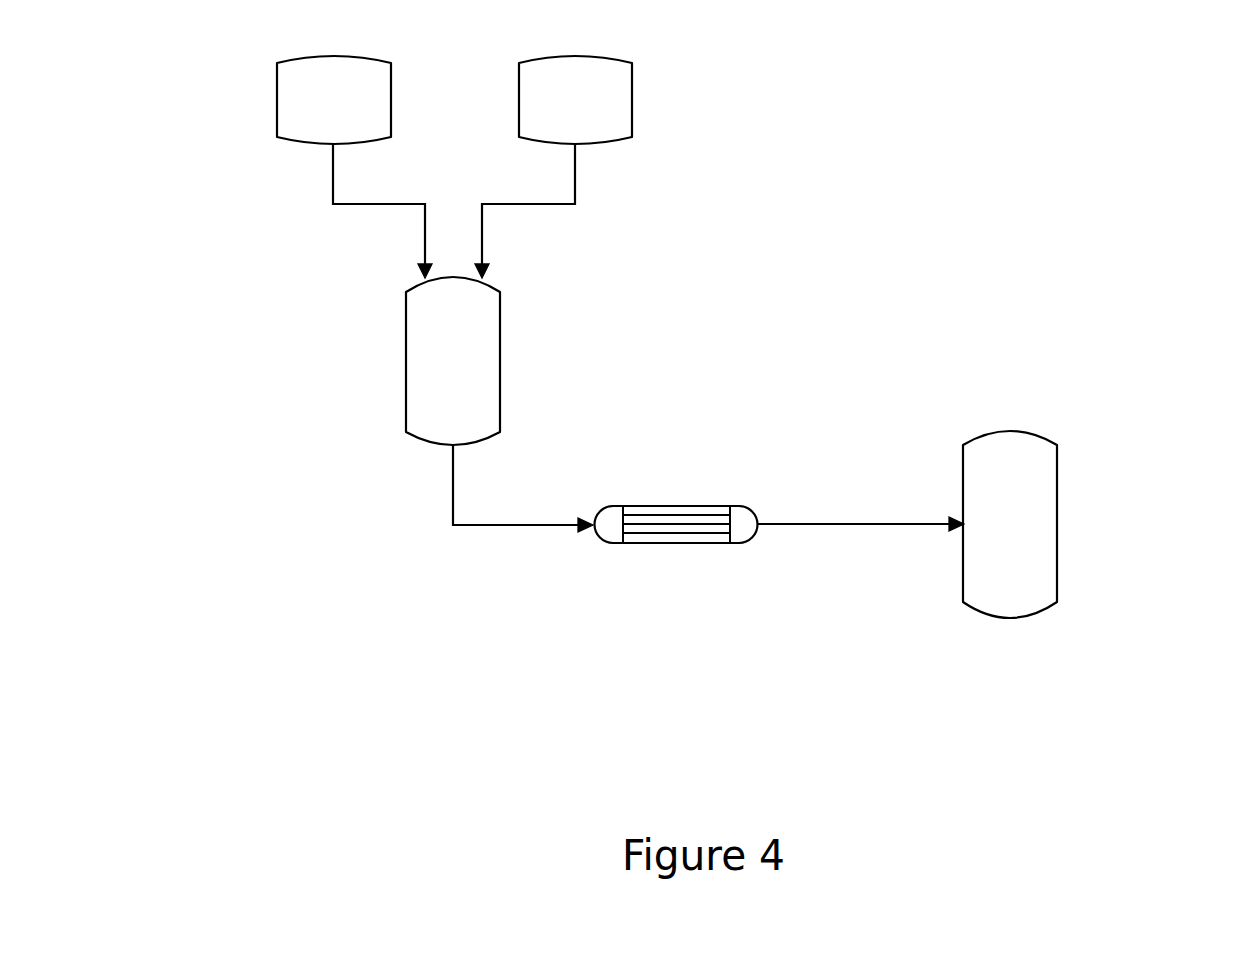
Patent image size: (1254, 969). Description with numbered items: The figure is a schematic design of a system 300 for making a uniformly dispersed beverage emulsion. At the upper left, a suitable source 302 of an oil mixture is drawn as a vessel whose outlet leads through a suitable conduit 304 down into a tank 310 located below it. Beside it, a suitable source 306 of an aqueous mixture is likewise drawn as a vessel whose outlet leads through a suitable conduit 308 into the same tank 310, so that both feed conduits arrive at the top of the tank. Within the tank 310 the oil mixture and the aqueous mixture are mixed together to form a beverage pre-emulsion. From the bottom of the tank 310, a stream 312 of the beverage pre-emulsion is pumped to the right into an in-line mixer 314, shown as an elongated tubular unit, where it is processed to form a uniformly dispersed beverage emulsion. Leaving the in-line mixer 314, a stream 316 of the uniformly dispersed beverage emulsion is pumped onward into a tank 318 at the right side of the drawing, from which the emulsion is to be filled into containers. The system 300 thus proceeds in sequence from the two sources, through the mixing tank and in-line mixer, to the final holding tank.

The system 300 is at (870, 190).
The source of an oil mixture 302 is at (277, 102).
The conduit 304 is at (333, 185).
The source of an aqueous mixture 306 is at (632, 108).
The conduit 308 is at (575, 185).
The tank 310 is at (500, 375).
The stream of the beverage pre-emulsion 312 is at (515, 527).
The in-line mixer 314 is at (675, 506).
The stream of the uniformly dispersed beverage emulsion 316 is at (853, 524).
The tank 318 is at (1057, 527).